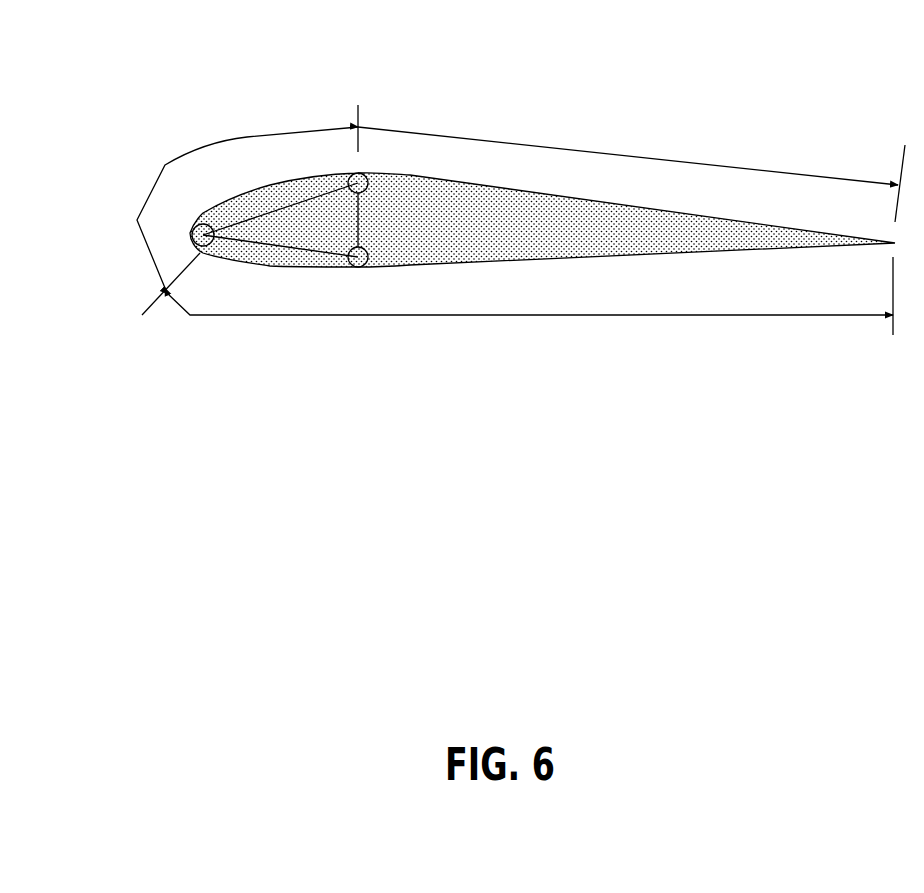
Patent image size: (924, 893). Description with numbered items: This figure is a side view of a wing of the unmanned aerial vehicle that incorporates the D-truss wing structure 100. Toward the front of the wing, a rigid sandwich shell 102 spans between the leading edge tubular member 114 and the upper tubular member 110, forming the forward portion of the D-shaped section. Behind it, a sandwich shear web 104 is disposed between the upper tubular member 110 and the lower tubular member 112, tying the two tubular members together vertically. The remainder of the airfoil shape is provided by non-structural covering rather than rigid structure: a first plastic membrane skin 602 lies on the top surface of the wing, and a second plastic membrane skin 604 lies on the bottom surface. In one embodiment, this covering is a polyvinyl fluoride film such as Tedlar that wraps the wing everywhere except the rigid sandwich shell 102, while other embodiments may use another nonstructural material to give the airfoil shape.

The airfoil cross-section 100 is at (311, 84).
The outer contour / chord reference outline 102 is at (207, 150).
The thickness line between upper and lower points 104 is at (358, 232).
The upper surface reference point 110 is at (360, 174).
The lower surface reference point 112 is at (358, 262).
The leading edge reference point 114 is at (202, 246).
The upper reference length dimension 602 is at (640, 155).
The lower reference length dimension 604 is at (592, 315).